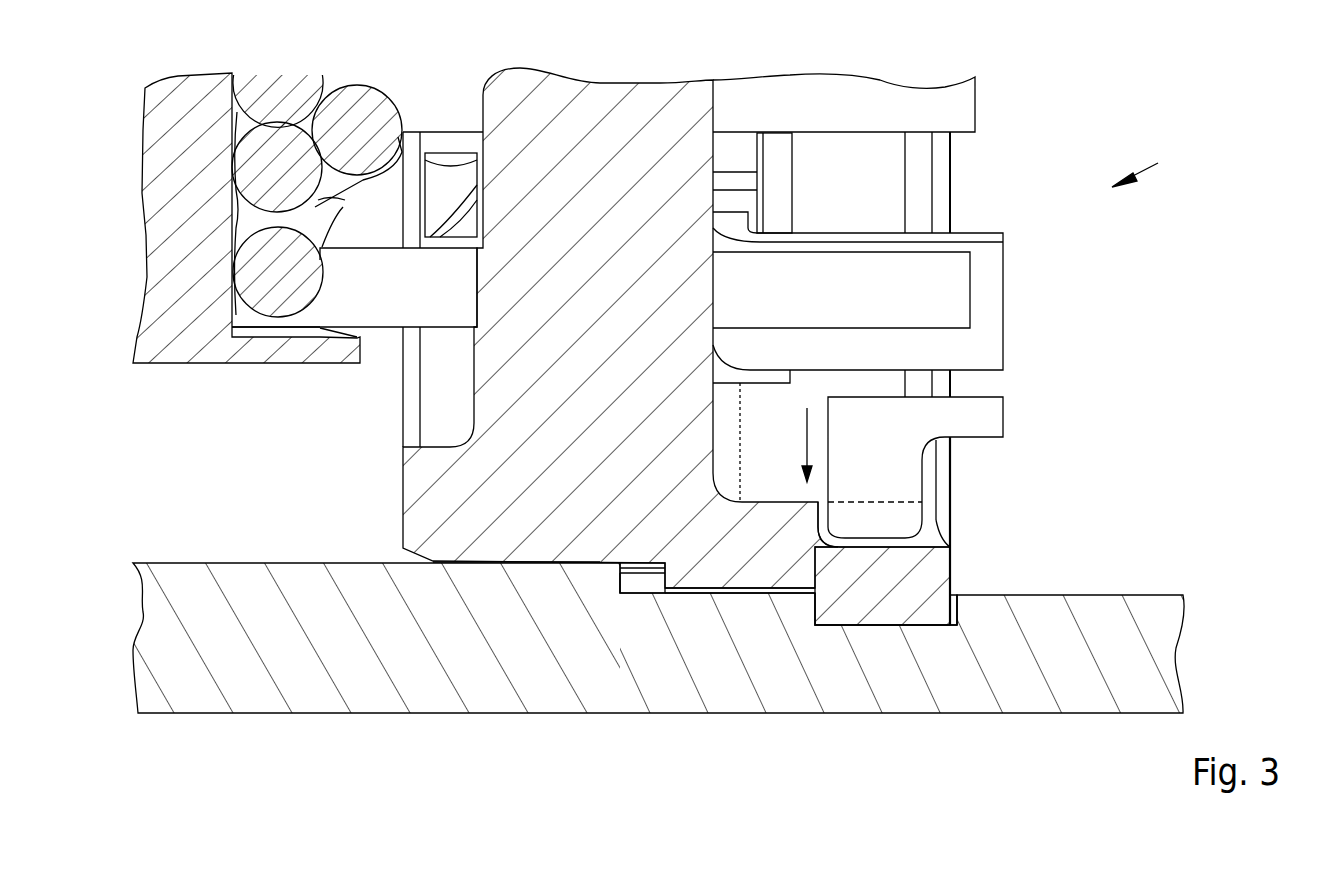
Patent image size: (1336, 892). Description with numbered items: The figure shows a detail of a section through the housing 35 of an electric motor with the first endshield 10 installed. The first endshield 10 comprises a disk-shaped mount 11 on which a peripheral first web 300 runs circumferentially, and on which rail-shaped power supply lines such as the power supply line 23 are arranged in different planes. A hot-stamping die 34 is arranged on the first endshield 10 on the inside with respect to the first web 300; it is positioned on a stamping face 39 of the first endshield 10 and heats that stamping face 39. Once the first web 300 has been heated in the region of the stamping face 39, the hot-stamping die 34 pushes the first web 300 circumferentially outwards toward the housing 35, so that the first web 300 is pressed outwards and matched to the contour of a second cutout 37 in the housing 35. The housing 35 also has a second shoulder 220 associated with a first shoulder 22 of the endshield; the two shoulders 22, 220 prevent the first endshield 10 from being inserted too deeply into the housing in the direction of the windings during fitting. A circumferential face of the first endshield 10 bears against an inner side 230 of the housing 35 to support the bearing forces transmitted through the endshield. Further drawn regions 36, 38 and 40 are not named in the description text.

The first endshield 10 is at (1150, 164).
The mount 11 is at (420, 491).
The first shoulder 22 is at (654, 567).
The second shoulder 220 is at (618, 583).
The power supply line 23 is at (582, 543).
The inner side of the housing 230 is at (478, 564).
The hot-stamping die 34 is at (1003, 418).
The housing 35 is at (1105, 613).
The gap 36 is at (962, 603).
The second cutout 37 is at (900, 627).
The support ring 38 is at (852, 607).
The stamping face 39 is at (920, 533).
The gap 40 is at (740, 596).
The first web 300 is at (777, 482).